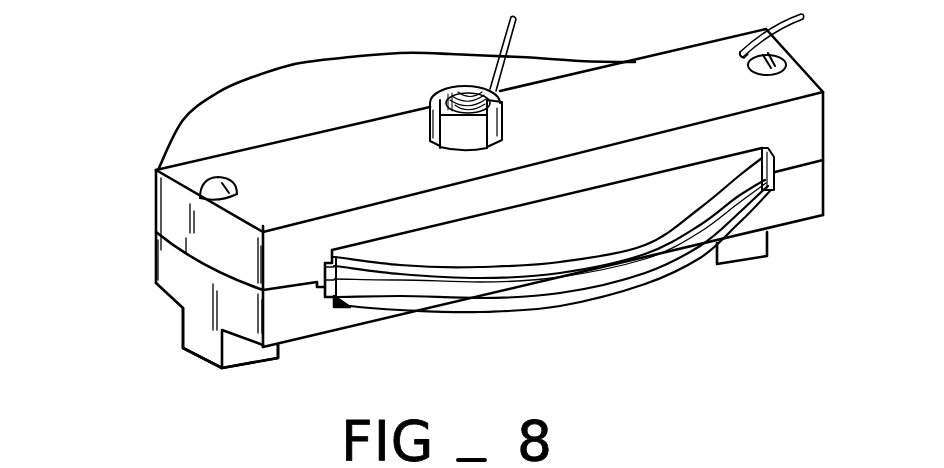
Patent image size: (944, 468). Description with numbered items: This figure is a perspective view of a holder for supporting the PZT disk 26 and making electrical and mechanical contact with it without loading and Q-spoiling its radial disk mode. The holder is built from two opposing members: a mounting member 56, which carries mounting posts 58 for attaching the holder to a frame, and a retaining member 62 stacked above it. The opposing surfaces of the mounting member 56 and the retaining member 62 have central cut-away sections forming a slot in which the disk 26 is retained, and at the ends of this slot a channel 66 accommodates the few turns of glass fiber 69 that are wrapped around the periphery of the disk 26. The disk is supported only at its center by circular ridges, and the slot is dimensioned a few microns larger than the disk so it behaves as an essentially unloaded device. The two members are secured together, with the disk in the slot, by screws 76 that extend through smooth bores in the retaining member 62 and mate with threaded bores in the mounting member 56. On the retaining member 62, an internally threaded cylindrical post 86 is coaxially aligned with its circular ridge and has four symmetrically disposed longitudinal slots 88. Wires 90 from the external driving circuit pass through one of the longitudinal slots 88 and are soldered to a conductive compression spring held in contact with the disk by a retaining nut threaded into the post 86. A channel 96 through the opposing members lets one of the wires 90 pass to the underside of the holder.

The PZT disk 26 is at (590, 231).
The mounting member 56 is at (172, 272).
The mounting posts 58 is at (178, 330).
The retaining member 62 is at (162, 210).
The channel 66 is at (773, 181).
The glass fiber 69 is at (328, 298).
The screws 76 is at (202, 182).
The internally threaded cylindrical post 86 is at (433, 100).
The longitudinal slots 88 is at (446, 93).
The wires 90 is at (512, 28).
The channel 96 is at (743, 53).